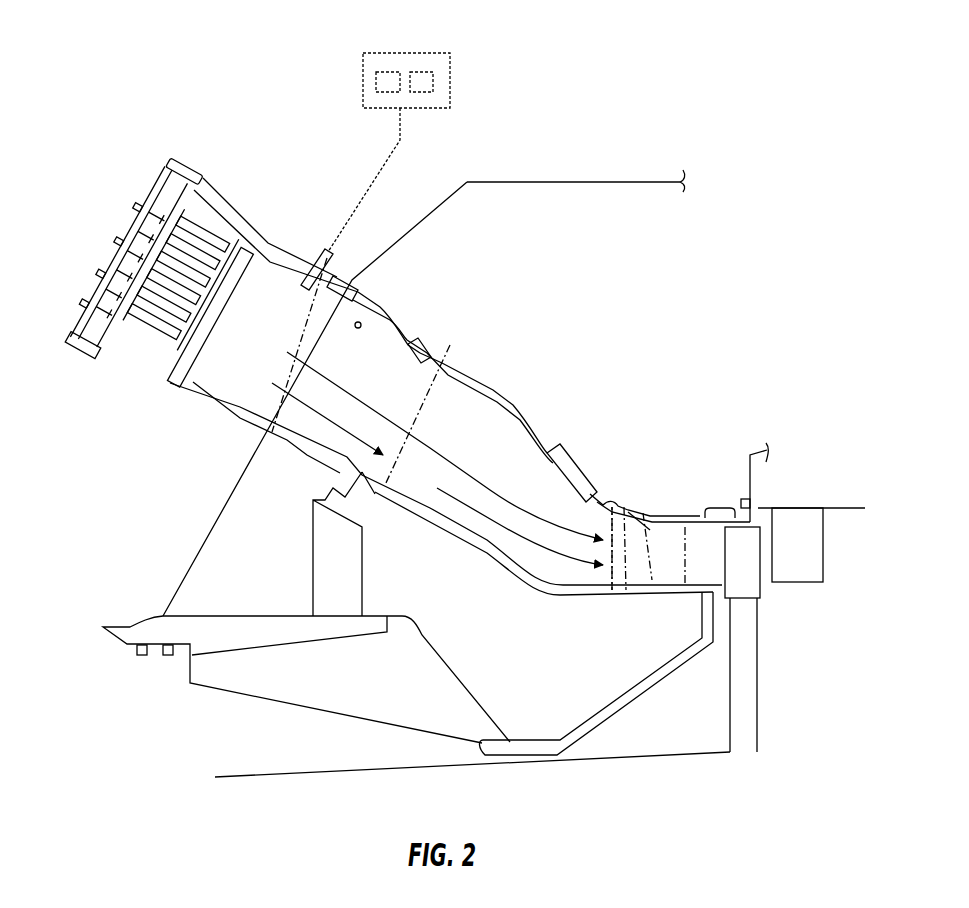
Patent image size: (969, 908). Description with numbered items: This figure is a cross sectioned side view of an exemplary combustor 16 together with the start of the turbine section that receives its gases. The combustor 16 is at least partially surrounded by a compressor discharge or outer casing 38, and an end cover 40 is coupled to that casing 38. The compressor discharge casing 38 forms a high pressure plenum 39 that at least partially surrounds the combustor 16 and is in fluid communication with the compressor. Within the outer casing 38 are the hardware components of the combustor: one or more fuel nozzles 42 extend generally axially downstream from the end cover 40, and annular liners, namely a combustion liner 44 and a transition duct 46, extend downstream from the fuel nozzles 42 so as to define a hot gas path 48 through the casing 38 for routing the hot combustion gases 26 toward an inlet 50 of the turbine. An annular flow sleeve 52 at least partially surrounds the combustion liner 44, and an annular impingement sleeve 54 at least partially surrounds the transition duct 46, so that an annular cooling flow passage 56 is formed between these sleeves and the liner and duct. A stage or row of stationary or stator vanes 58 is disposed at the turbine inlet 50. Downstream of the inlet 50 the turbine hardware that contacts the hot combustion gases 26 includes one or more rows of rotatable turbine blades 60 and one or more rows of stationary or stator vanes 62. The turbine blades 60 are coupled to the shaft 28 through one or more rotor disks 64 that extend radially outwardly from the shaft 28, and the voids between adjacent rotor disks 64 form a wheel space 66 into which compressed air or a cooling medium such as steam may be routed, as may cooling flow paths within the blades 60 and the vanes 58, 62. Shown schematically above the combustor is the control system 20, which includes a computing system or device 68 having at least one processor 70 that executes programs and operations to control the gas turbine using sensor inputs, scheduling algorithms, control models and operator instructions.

The combustor 16 is at (312, 163).
The control system 20 is at (408, 53).
The computing system or device 68 is at (452, 60).
The processor 70 is at (380, 82).
The compressor discharge casing 38 is at (468, 180).
The high pressure plenum 39 is at (612, 268).
The end cover 40 is at (94, 299).
The fuel nozzles 42 is at (165, 317).
The combustion liner 44 is at (358, 327).
The annular flow sleeve 52 is at (405, 333).
The annular cooling flow passage 56 is at (453, 371).
The annular impingement sleeve 54 is at (493, 391).
The transition duct 46 is at (547, 457).
The hot gas path 48 is at (425, 441).
The hot combustion gases 26 is at (304, 393).
The stator vanes 58 is at (632, 525).
The turbine inlet 50 is at (637, 572).
The turbine blades 60 is at (753, 540).
The stator vanes 62 is at (802, 588).
The rotor disks 64 is at (758, 700).
The wheel space 66 is at (596, 673).
The shaft 28 is at (647, 755).